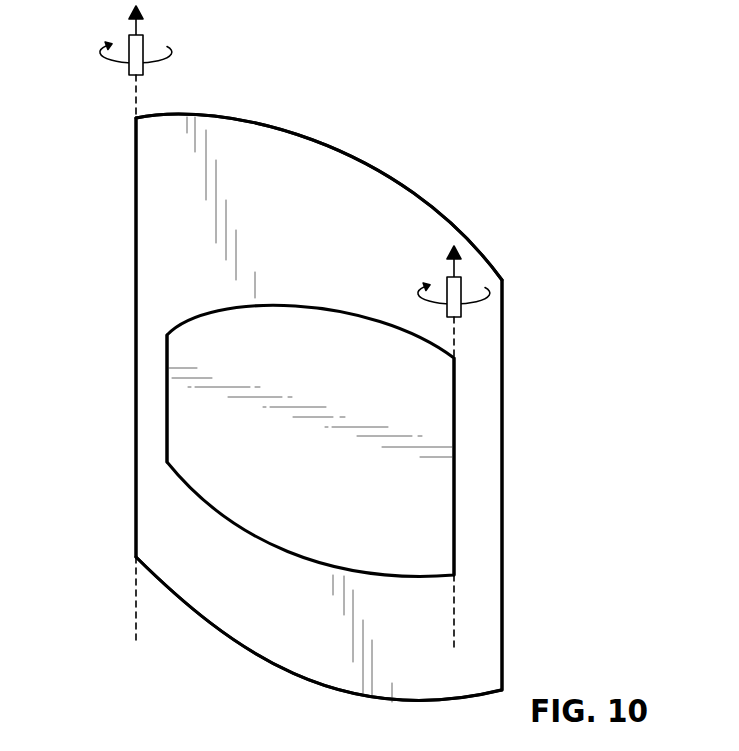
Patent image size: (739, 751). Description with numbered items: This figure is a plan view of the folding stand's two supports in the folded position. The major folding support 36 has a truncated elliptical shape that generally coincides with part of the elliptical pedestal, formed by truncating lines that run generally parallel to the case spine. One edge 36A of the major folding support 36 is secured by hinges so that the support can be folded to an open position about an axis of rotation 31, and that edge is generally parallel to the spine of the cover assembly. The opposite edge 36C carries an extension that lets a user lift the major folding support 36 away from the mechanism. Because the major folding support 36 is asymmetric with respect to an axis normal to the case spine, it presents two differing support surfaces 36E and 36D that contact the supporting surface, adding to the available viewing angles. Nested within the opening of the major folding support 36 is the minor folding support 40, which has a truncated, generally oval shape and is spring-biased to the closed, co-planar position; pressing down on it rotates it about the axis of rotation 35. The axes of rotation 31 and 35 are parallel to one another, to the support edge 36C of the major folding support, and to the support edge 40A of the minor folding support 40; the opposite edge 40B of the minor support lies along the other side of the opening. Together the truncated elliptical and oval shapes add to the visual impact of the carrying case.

The axis of rotation 31 is at (135, 603).
The axis of rotation 35 is at (456, 613).
The major folding support 36 is at (348, 234).
The edge of the major folding support 36A is at (136, 207).
The edge of the major folding support 36C is at (502, 375).
The support surface 36D is at (243, 648).
The support surface 36E is at (313, 134).
The minor folding support 40 is at (308, 496).
The support edge of the minor folding support 40A is at (167, 432).
The right edge of window opening 40B is at (455, 527).